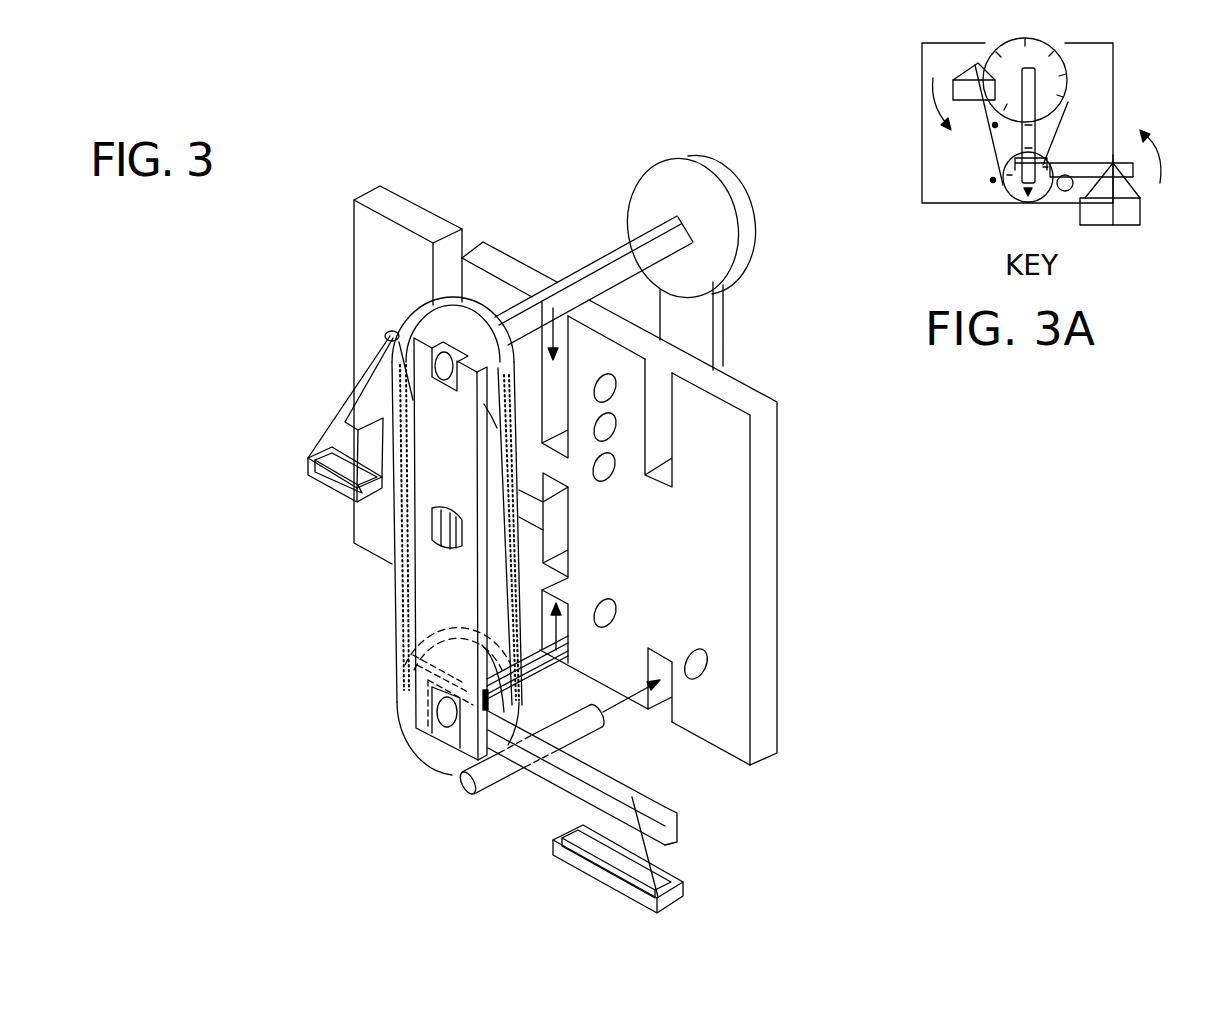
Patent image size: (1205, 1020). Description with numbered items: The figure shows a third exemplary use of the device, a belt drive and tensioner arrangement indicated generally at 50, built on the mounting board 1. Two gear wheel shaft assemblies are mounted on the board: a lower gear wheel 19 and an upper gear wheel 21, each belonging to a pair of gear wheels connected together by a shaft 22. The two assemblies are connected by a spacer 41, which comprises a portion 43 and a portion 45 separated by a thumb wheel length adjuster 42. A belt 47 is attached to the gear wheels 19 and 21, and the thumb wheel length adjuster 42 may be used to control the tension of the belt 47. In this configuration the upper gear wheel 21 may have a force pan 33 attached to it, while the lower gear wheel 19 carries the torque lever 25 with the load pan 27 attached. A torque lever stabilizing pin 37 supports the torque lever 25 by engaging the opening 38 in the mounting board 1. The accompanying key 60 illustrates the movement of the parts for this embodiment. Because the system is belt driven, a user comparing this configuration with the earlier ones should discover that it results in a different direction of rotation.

In FIG. 3, the mounting board 1 is at (518, 379).
In FIG. 3, the gear wheel 19 is at (410, 716).
In FIG. 3, the gear wheel 21 is at (425, 305).
In FIG. 3, the shaft 22 is at (602, 275).
In FIG. 3, the torque lever 25 is at (555, 778).
In FIG. 3, the load pan 27 is at (606, 880).
In FIG. 3, the force pan 33 is at (307, 474).
In FIG. 3, the torque lever stabilizing pin 37 is at (593, 728).
In FIG. 3, the opening 38 is at (688, 650).
In FIG. 3, the spacer 41 is at (384, 634).
In FIG. 3, the thumb wheel length adjuster 42 is at (445, 548).
In FIG. 3, the portion 43 is at (451, 549).
In FIG. 3, the portion 45 is at (569, 390).
In FIG. 3, the belt 47 is at (515, 550).
In FIG. 3, the frame 50 is at (868, 478).
In FIG. 3A, the key diagram 60 is at (898, 106).